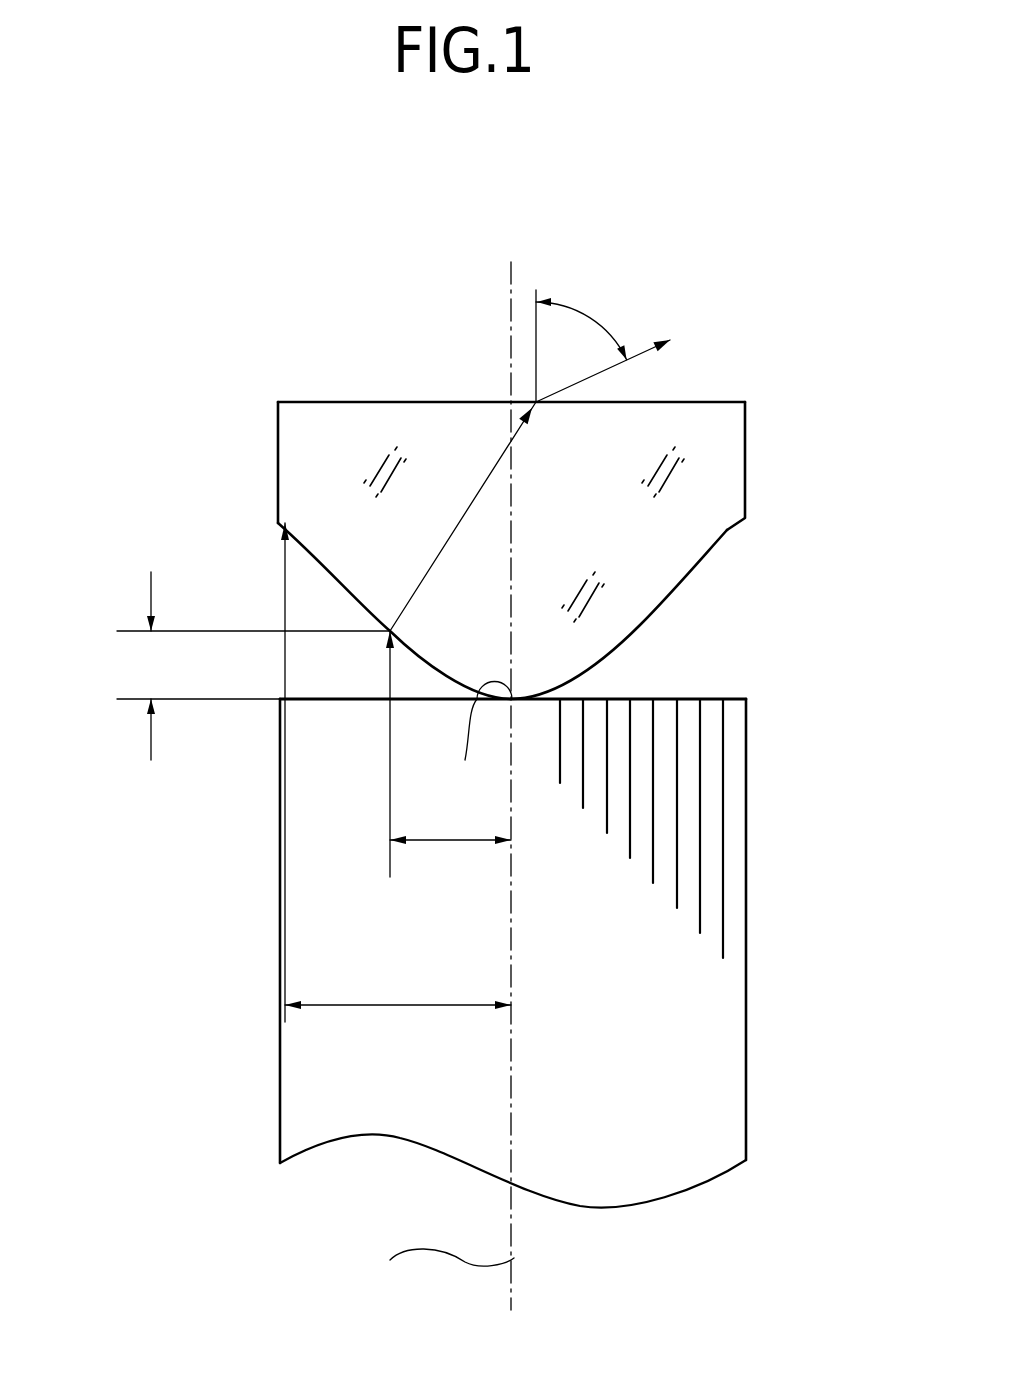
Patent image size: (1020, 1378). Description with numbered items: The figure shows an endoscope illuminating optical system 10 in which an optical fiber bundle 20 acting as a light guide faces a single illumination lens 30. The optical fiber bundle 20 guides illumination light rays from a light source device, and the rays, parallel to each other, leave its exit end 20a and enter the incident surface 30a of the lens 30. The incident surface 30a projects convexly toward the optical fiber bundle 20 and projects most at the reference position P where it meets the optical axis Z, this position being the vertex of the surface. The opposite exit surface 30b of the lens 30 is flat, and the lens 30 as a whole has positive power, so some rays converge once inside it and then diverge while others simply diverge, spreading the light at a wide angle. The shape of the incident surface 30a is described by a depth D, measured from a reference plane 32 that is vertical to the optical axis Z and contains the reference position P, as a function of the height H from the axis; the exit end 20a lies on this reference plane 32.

The endoscope illuminating optical system 10 is at (160, 357).
The optical fiber bundle 20 is at (584, 932).
The exit end 20a is at (673, 697).
The illumination lens 30 is at (575, 499).
The incident surface 30a is at (652, 602).
The exit surface 30b is at (380, 402).
The reference plane 32 is at (216, 700).